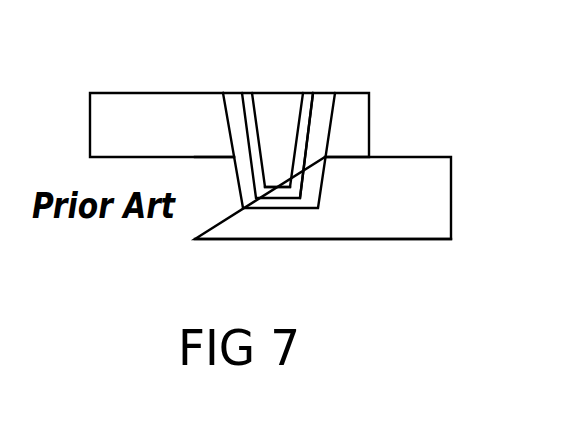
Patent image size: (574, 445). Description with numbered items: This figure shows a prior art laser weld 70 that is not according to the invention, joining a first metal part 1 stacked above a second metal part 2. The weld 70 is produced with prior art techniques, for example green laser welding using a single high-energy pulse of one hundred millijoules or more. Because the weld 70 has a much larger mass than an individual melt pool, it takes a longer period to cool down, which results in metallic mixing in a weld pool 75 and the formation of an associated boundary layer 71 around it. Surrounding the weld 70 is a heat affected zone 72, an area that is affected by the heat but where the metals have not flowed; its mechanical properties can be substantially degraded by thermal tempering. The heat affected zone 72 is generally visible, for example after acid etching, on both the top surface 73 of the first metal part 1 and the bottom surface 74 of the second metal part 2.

The first metal part 1 is at (158, 93).
The second metal part 2 is at (375, 157).
The laser weld 70 is at (288, 93).
The boundary layer 71 is at (308, 147).
The heat affected zone 72 is at (235, 93).
The top surface 73 is at (360, 93).
The bottom surface 74 is at (217, 239).
The weld pool 75 is at (278, 93).